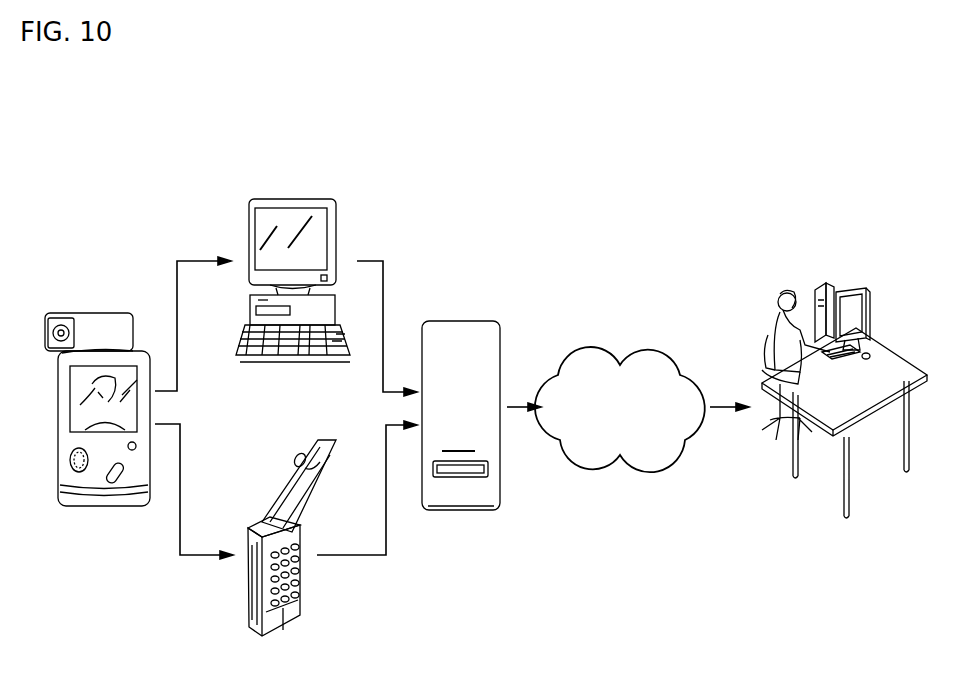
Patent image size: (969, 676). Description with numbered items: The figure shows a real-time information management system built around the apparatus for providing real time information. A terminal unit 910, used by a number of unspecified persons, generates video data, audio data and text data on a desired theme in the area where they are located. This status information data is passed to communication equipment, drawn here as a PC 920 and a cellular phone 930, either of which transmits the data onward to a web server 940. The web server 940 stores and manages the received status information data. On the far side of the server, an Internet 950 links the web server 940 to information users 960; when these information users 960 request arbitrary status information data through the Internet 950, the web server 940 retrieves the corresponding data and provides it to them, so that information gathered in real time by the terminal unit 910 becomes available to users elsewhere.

The terminal unit 910 is at (103, 313).
The PC 920 is at (305, 195).
The cellular phone 930 is at (262, 512).
The web server 940 is at (468, 318).
The Internet 950 is at (643, 352).
The information users 960 is at (840, 275).